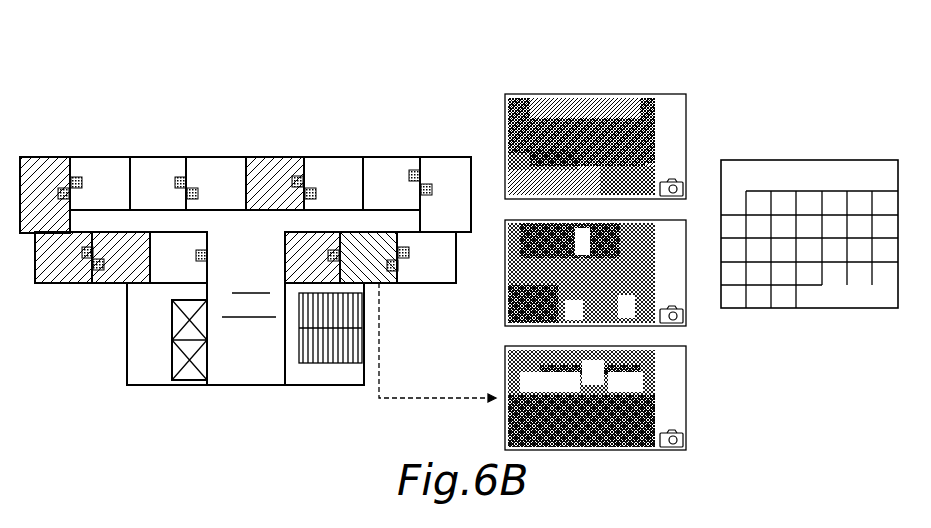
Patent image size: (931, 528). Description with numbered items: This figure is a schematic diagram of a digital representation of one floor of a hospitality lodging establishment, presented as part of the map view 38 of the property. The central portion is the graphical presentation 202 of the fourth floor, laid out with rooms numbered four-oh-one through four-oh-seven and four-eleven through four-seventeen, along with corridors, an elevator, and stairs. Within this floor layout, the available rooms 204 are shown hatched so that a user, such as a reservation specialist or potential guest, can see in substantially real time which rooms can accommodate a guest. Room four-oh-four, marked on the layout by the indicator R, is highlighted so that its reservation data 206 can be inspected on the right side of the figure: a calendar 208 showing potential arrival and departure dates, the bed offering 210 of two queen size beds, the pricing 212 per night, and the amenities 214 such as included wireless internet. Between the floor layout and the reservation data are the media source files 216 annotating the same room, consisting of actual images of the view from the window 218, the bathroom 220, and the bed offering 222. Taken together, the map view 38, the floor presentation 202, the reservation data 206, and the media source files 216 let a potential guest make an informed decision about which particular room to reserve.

The map view 38 is at (147, 133).
The graphical presentation of the floor 202 is at (220, 157).
The available rooms 204 is at (40, 156).
The reservation data 206 is at (830, 124).
The calendar 208 is at (731, 159).
The bed offering 210 is at (790, 326).
The pricing 212 is at (790, 388).
The amenities 214 is at (790, 430).
The media source files 216 is at (648, 89).
The view from the window 218 is at (505, 116).
The bathroom 220 is at (508, 305).
The bed offering 222 is at (508, 428).
The selected room indicator R is at (457, 237).